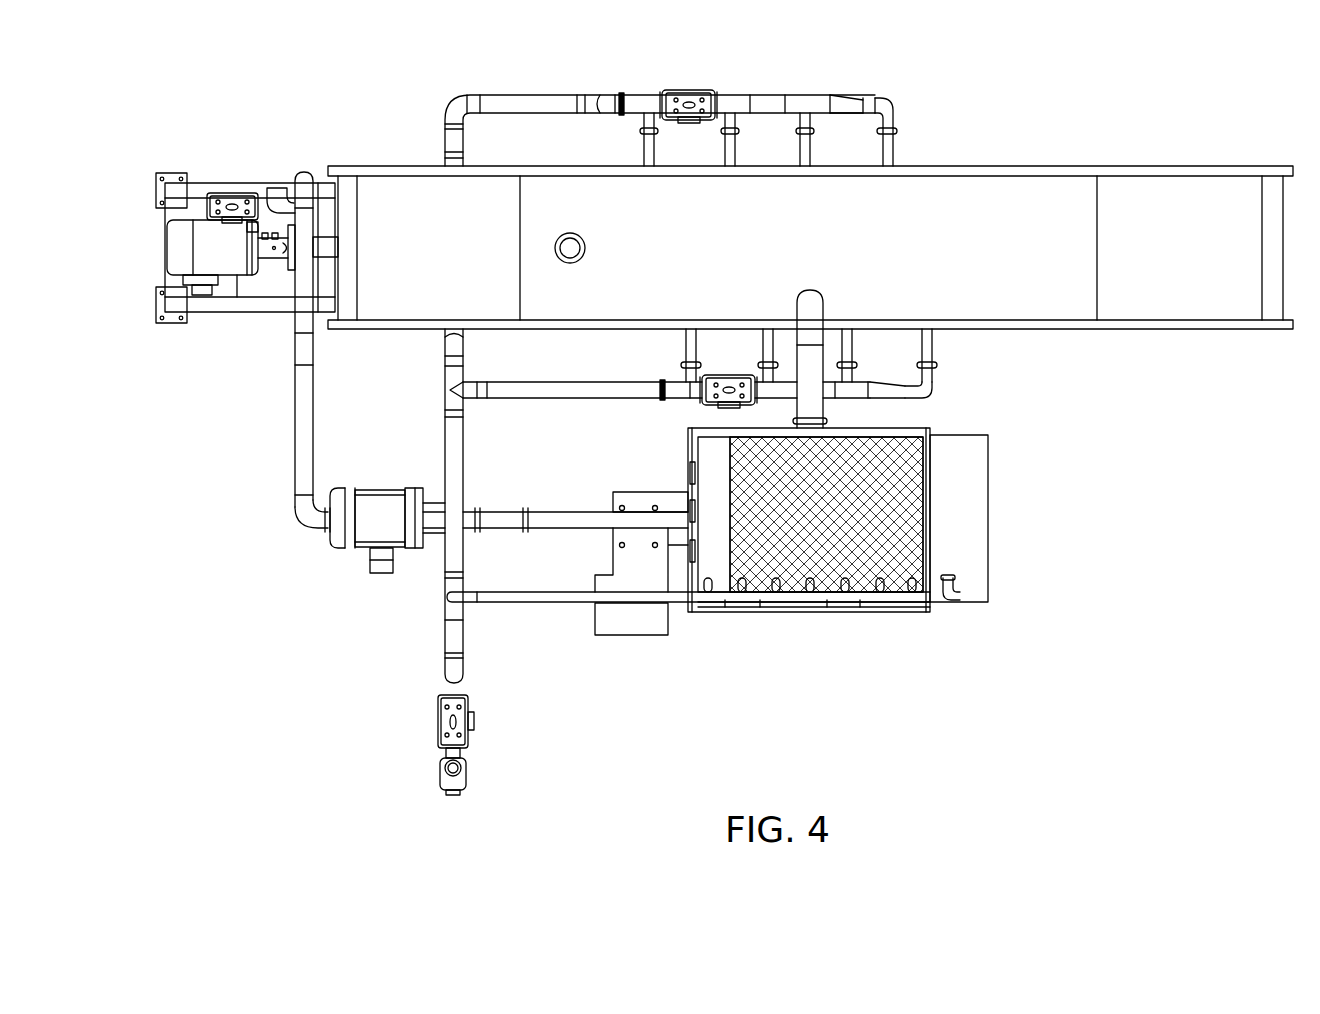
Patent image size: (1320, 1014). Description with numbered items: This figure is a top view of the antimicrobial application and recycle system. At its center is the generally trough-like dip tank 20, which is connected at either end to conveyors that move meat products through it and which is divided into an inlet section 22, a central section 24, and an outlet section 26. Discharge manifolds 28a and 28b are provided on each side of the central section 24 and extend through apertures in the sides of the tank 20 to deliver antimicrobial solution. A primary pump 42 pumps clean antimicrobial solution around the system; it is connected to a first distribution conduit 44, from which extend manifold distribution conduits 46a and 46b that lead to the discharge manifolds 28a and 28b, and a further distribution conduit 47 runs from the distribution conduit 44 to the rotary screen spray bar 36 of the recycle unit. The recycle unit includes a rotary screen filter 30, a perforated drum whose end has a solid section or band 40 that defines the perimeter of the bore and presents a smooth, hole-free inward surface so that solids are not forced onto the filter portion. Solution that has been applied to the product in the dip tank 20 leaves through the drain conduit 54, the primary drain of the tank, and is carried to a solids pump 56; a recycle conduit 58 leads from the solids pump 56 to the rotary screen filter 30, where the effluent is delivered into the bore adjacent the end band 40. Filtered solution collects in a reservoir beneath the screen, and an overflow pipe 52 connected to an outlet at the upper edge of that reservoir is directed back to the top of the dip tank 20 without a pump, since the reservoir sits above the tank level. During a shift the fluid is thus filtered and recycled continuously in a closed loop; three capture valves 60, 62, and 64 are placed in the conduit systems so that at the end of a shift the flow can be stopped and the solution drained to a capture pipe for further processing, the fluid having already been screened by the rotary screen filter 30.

The dip tank 20 is at (959, 237).
The inlet section 22 is at (1183, 167).
The central section 24 is at (594, 330).
The outlet section 26 is at (400, 167).
The discharge manifold 28a is at (645, 150).
The discharge manifold 28b is at (853, 369).
The rotary screen filter 30 is at (897, 540).
The rotary screen spray bar 36 is at (840, 606).
The solid section 40 is at (967, 478).
The primary pump 42 is at (346, 550).
The first distribution conduit 44 is at (452, 442).
The manifold distribution conduit 46a is at (553, 100).
The manifold distribution conduit 46b is at (538, 400).
The further distribution conduit 47 is at (545, 603).
The overflow pipe 52 is at (815, 306).
The drain conduit 54 is at (585, 248).
The solids pump 56 is at (193, 248).
The recycle conduit 58 is at (300, 411).
The capture valve 60 is at (437, 722).
The capture valve 62 is at (686, 90).
The capture valve 64 is at (728, 375).